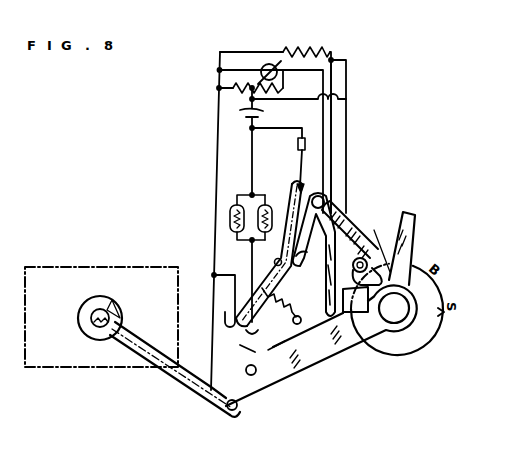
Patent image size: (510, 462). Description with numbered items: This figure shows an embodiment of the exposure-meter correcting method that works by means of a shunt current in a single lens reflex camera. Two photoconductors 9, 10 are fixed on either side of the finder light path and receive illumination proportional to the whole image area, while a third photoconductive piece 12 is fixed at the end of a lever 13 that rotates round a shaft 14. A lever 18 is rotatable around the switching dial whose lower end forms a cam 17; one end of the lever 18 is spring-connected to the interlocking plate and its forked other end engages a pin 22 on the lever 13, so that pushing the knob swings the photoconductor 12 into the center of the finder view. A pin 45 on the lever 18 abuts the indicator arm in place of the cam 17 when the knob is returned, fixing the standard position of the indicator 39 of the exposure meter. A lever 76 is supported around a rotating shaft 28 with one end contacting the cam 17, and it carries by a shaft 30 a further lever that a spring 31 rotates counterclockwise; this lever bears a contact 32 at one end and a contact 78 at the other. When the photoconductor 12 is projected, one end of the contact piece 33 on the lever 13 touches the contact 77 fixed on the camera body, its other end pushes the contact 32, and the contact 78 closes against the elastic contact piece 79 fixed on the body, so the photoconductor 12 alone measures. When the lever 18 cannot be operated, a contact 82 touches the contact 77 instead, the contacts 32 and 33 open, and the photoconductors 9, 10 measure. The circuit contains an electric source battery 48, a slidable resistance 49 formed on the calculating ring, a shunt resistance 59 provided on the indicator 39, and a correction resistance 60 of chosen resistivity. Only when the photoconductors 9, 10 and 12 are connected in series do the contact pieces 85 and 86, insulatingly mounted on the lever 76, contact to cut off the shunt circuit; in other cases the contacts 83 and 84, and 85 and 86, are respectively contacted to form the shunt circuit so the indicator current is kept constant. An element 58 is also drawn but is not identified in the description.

The photoconductor 9 is at (267, 205).
The photoconductor 10 is at (233, 205).
The third photoconductive piece 12 is at (104, 332).
The lever 13 is at (146, 352).
The shaft 14 is at (232, 412).
The cam 17 is at (400, 355).
The lever 18 is at (323, 360).
The pin 22 is at (262, 378).
The shaft 28 is at (326, 200).
The shaft 30 is at (274, 262).
The spring 31 is at (290, 306).
The contact 32 is at (282, 323).
The contact piece 33 is at (282, 352).
The indicator 39 is at (264, 64).
The pin 45 is at (373, 285).
The electric source battery 48 is at (243, 107).
The slidable resistance 49 is at (220, 87).
The index mark 58 is at (444, 314).
The shunt resistance 59 is at (307, 50).
The correction resistance 60 is at (333, 58).
The lever 76 is at (328, 270).
The contact 77 is at (242, 350).
The contact 78 is at (298, 187).
The elastic contact piece 79 is at (298, 156).
The contact 82 is at (238, 327).
The contact 83 is at (362, 245).
The contact 84 is at (352, 232).
The contact piece 85 is at (345, 222).
The contact piece 86 is at (307, 252).